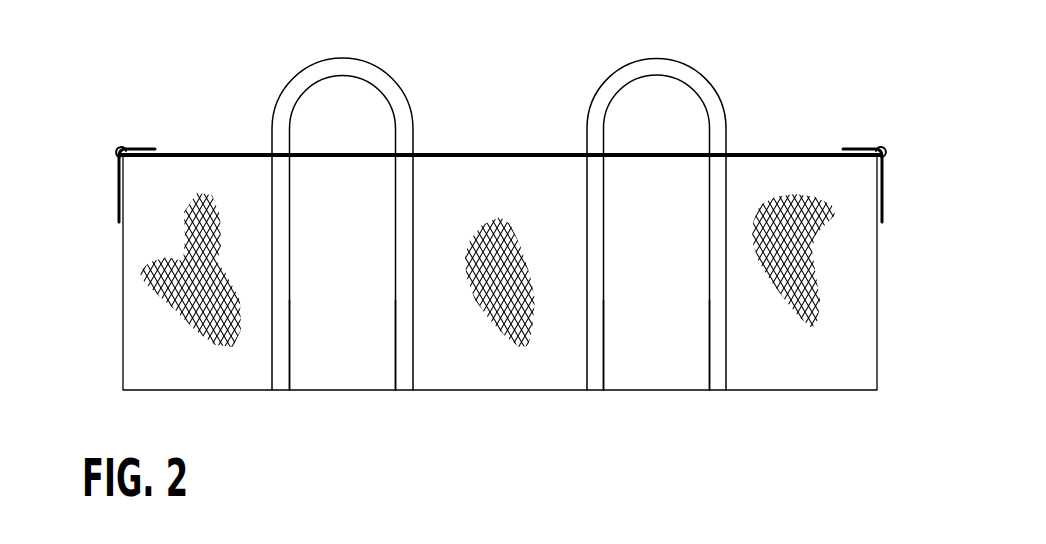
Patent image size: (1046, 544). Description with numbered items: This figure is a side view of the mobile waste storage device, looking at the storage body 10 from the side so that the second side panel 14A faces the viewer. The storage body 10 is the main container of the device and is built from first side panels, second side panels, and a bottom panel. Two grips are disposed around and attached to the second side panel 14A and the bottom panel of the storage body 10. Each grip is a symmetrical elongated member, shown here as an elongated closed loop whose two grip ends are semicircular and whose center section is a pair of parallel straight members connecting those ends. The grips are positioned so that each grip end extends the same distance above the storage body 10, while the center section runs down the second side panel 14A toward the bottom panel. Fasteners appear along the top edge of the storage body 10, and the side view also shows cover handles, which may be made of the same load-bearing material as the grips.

The storage body 10 is at (897, 212).
The second side panel 14A is at (802, 377).